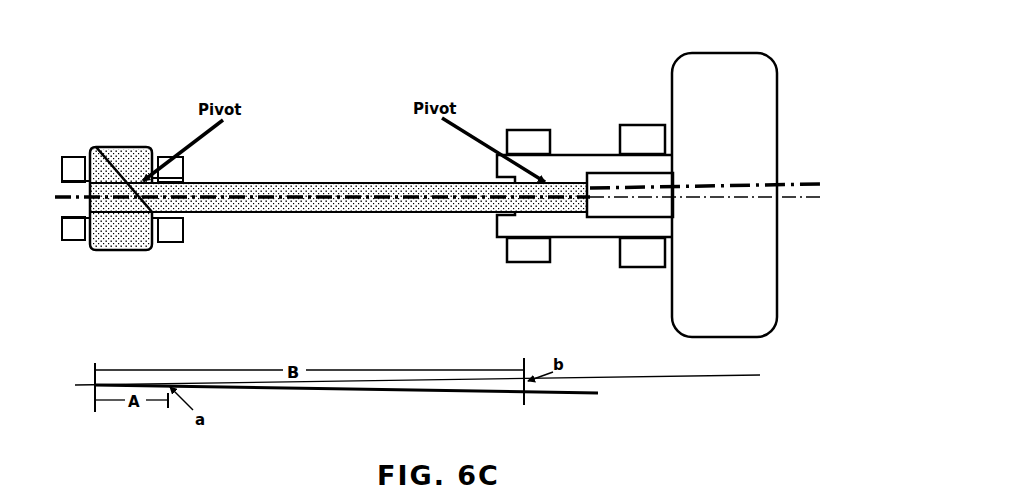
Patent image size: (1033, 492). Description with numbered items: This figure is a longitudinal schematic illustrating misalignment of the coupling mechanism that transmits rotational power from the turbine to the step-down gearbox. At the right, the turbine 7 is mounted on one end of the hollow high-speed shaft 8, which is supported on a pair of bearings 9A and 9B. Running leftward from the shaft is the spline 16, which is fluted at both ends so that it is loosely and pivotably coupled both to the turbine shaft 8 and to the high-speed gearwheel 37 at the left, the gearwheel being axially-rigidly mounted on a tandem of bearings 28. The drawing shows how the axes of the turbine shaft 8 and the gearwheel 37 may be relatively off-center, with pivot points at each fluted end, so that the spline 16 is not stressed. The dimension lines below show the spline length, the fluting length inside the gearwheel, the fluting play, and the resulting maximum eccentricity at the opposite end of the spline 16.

The turbine 7 is at (720, 57).
The high-speed shaft 8 is at (497, 232).
The bearing 9A is at (527, 128).
The bearing 9B is at (637, 125).
The spline 16 is at (337, 213).
The tandem of bearings 28 is at (173, 233).
The high-speed gearwheel 37 is at (128, 147).